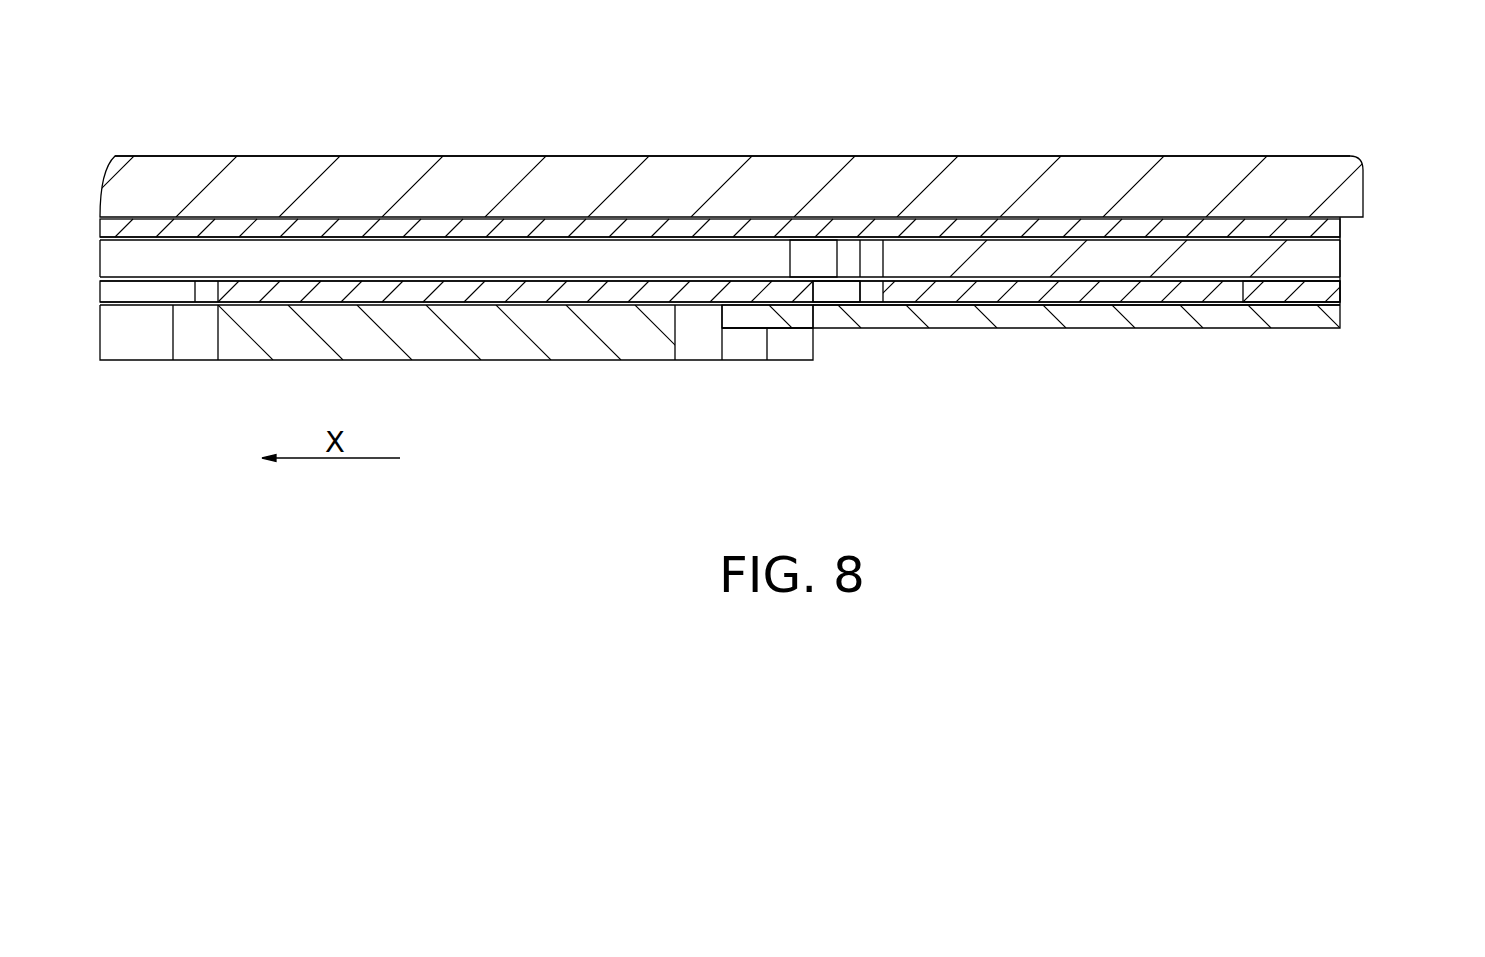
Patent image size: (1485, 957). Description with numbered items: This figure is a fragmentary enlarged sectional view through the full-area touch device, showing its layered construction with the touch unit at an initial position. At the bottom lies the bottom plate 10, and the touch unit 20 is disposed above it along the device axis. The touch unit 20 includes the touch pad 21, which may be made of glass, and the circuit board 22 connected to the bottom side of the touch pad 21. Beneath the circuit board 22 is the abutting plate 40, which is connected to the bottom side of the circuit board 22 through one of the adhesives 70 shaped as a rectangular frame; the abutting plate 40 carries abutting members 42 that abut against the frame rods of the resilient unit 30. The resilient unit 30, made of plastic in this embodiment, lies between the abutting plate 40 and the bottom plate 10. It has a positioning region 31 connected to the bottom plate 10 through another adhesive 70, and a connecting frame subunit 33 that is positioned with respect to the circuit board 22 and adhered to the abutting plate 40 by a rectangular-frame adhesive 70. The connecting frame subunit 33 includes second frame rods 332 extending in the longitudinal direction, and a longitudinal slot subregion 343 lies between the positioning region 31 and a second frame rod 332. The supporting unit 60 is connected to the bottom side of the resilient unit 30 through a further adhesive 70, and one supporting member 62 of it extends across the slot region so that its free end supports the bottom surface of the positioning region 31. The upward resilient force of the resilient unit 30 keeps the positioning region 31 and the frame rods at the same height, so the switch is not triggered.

The bottom plate 10 is at (572, 375).
The touch unit 20 is at (999, 143).
The touch pad 21 is at (1104, 157).
The circuit board 22 is at (1335, 230).
The resilient unit 30 is at (786, 259).
The positioning region 31 is at (625, 289).
The connecting frame subunit 33 is at (1238, 293).
The second frame rod 332 is at (1277, 297).
The longitudinal slot subregion 343 is at (826, 296).
The abutting plate 40 is at (786, 182).
The abutting member 42 is at (806, 257).
The supporting unit 60 is at (1031, 341).
The supporting member 62 is at (738, 315).
The adhesive 70 is at (1256, 225).